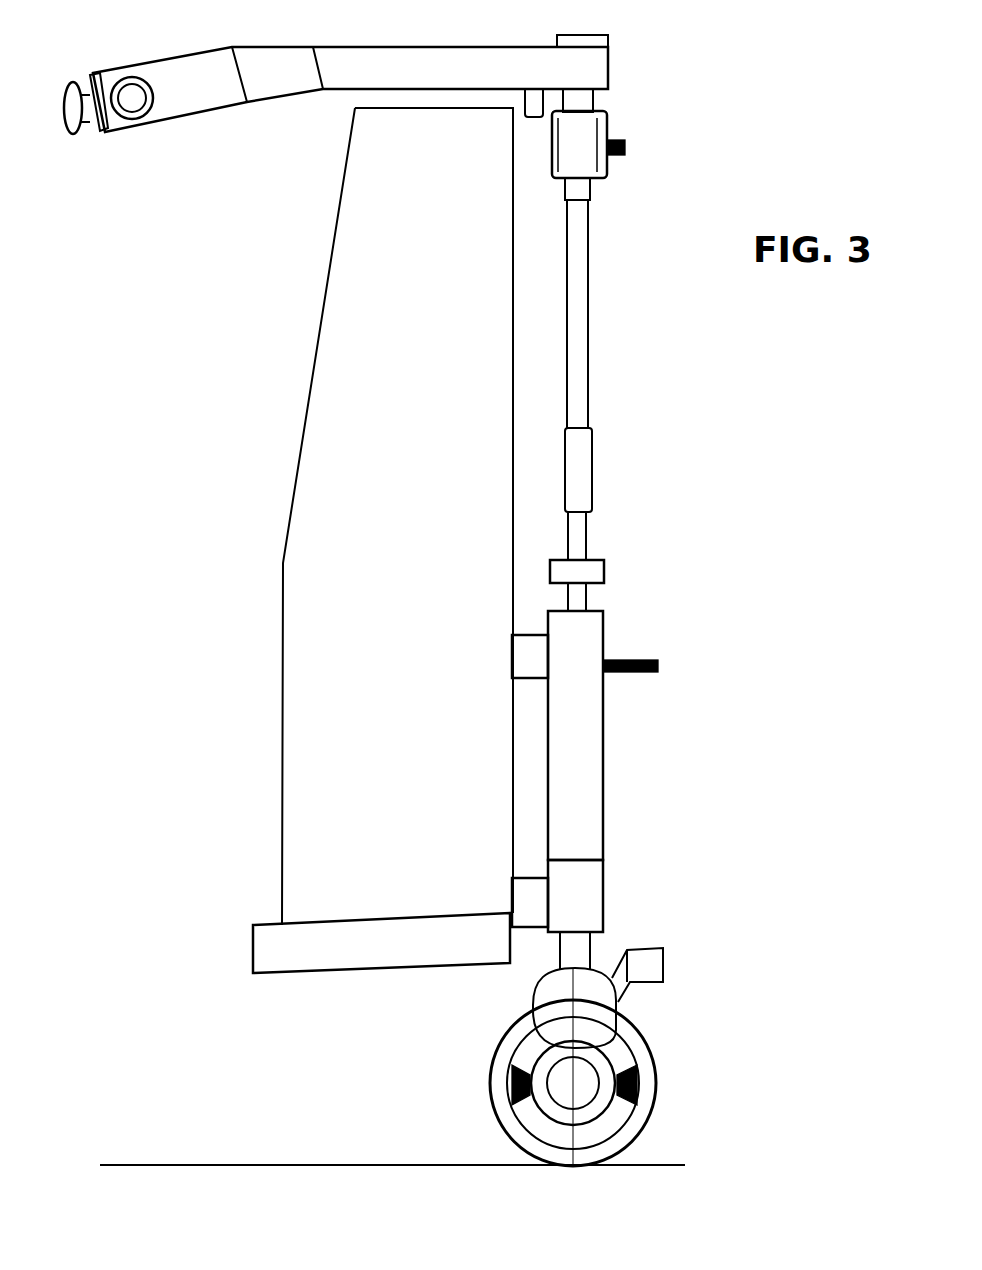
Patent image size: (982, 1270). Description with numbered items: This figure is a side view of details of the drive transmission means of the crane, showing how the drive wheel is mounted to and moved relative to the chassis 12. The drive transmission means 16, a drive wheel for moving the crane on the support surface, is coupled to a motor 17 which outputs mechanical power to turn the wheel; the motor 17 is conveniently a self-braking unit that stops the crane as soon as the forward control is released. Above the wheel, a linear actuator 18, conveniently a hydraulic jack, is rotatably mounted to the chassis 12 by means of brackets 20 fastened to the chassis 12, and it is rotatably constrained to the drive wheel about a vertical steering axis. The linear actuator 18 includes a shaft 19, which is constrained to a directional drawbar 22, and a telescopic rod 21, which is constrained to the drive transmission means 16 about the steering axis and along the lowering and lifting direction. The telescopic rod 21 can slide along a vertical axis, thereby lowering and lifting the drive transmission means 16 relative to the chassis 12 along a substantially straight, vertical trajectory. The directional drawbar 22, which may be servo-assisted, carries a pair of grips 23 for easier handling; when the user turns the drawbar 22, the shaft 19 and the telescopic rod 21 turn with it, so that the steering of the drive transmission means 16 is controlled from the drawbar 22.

The chassis 12 is at (272, 816).
The drive transmission means 16 is at (505, 1117).
The motor 17 is at (547, 1057).
The linear actuator 18 is at (615, 800).
The shaft 19 is at (578, 357).
The brackets 20 is at (520, 903).
The telescopic rod 21 is at (578, 953).
The directional drawbar 22 is at (277, 106).
The grips 23 is at (132, 98).